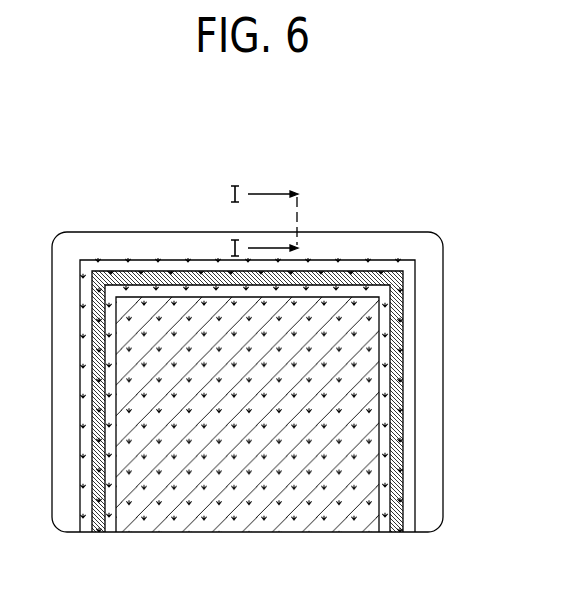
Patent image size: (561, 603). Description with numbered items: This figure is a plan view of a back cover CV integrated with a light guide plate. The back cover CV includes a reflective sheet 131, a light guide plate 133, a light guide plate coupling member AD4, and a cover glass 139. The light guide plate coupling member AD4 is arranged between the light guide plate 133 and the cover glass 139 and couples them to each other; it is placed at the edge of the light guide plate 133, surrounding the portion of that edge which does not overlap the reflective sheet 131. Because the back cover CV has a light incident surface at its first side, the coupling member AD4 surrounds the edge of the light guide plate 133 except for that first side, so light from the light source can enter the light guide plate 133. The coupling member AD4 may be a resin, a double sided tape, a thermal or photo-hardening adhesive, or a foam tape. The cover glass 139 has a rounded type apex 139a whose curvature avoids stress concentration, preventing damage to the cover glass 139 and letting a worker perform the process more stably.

The back cover integrated with a light guide plate CV is at (79, 210).
The cover glass 139 is at (445, 310).
The rounded type apex 139a is at (436, 232).
The light guide plate 133 is at (415, 403).
The reflective sheet 131 is at (381, 434).
The light guide plate coupling member AD4 is at (397, 462).